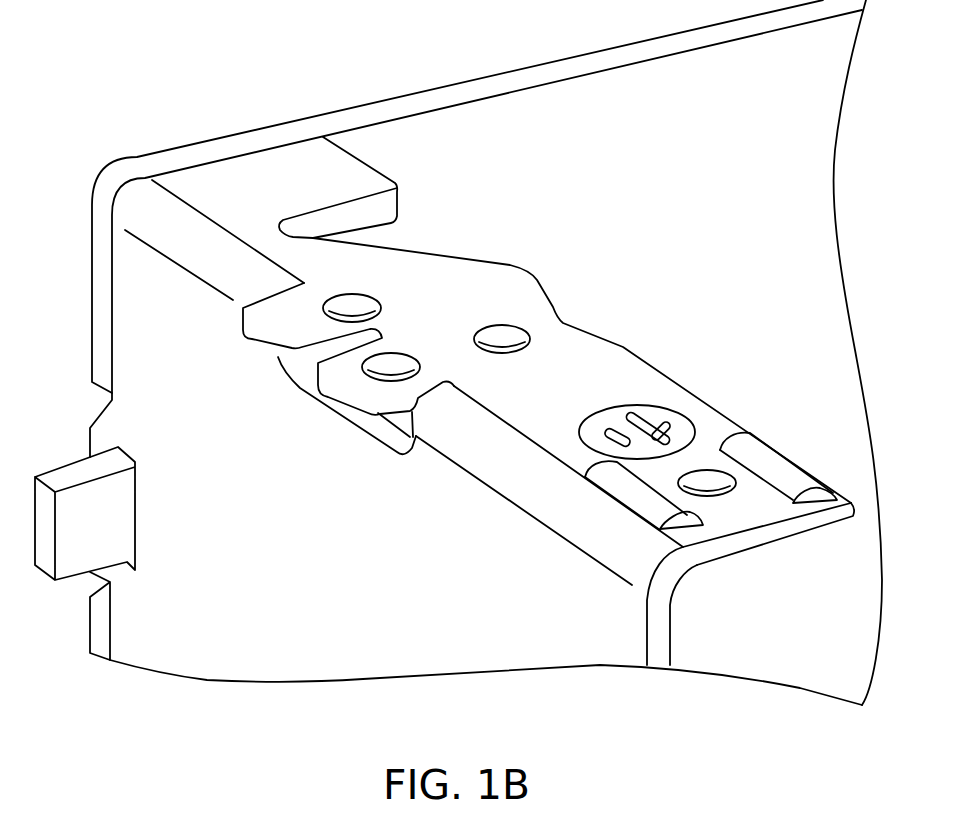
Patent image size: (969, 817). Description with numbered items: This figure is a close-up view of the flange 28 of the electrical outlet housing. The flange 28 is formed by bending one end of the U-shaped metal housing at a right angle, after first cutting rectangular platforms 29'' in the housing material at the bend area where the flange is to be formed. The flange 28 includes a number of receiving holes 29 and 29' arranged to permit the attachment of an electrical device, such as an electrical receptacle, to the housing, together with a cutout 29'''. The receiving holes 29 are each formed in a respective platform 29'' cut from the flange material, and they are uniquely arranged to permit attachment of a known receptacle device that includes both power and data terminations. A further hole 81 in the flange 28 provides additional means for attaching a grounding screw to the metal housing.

The flange 28 is at (310, 157).
The receiving holes 29 is at (392, 336).
The receiving hole 29' is at (508, 293).
The platform 29'' is at (322, 368).
The cutout 29''' is at (582, 354).
The hole 81 is at (703, 477).